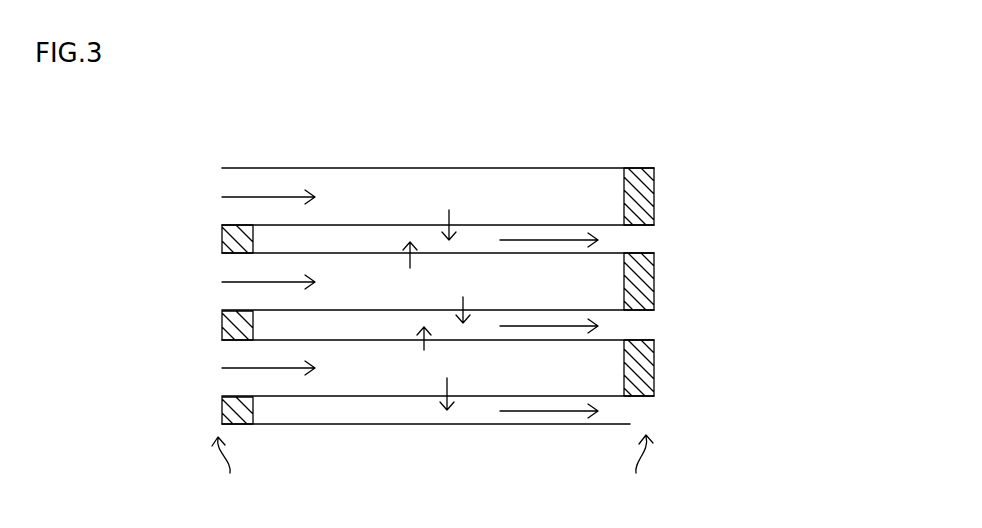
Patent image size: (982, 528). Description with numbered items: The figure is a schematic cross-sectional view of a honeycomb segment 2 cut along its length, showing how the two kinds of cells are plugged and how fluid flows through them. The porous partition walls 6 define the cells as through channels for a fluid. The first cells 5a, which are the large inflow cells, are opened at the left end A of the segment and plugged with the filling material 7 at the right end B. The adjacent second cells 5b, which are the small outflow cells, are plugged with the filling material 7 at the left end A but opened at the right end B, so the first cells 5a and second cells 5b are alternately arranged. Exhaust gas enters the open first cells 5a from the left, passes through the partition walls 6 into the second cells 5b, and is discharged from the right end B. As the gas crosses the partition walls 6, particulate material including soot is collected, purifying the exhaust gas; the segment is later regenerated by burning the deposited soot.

The honeycomb segment 2 is at (594, 101).
The first cell 5a is at (535, 197).
The second cell 5b is at (438, 323).
The partition wall 6 is at (474, 223).
The filling material 7 is at (637, 176).